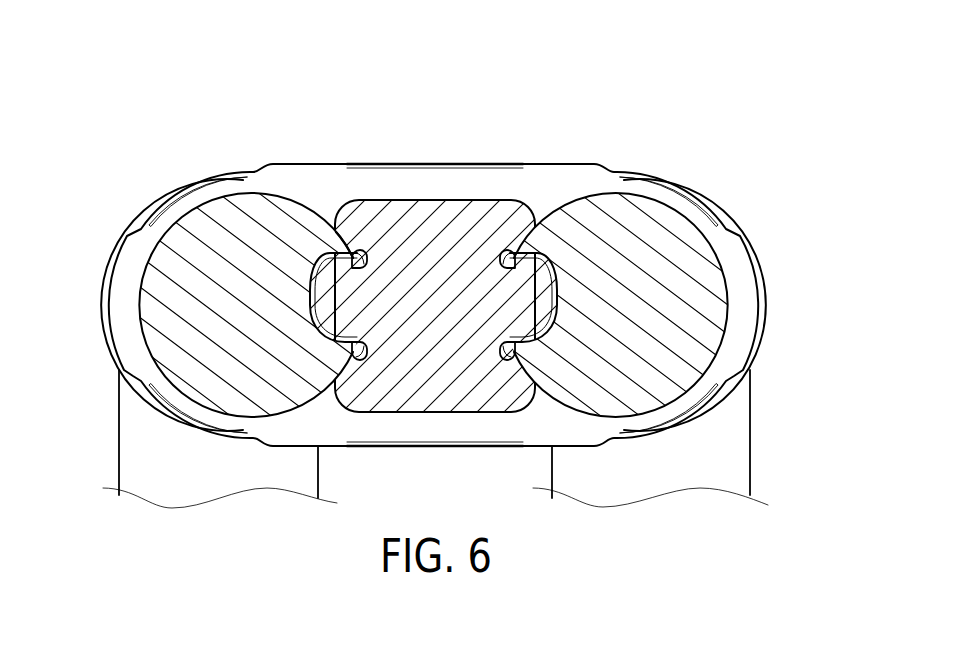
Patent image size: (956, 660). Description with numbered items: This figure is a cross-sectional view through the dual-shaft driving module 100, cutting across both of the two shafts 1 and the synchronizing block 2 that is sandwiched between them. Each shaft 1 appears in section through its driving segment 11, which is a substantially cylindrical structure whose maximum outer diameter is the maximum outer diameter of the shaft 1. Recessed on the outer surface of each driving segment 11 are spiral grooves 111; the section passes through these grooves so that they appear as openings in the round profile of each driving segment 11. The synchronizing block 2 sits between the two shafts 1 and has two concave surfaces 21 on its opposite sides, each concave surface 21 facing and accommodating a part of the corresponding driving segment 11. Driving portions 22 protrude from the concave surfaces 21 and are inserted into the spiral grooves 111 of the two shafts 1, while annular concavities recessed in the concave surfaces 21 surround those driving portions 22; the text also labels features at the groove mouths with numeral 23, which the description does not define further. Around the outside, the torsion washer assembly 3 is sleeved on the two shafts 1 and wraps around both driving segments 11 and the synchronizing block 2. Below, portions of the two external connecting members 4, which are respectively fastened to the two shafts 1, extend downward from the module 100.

The dual-shaft driving module 100 is at (152, 96).
The shaft 1 is at (137, 277).
The driving segment 11 is at (215, 215).
The spiral groove 111 is at (323, 264).
The synchronizing block 2 is at (452, 192).
The concave surface 21 is at (331, 356).
The driving portion 22 is at (332, 271).
The hook end 23 is at (354, 252).
The torsion washer assembly 3 is at (550, 153).
The external connecting member 4 is at (108, 436).